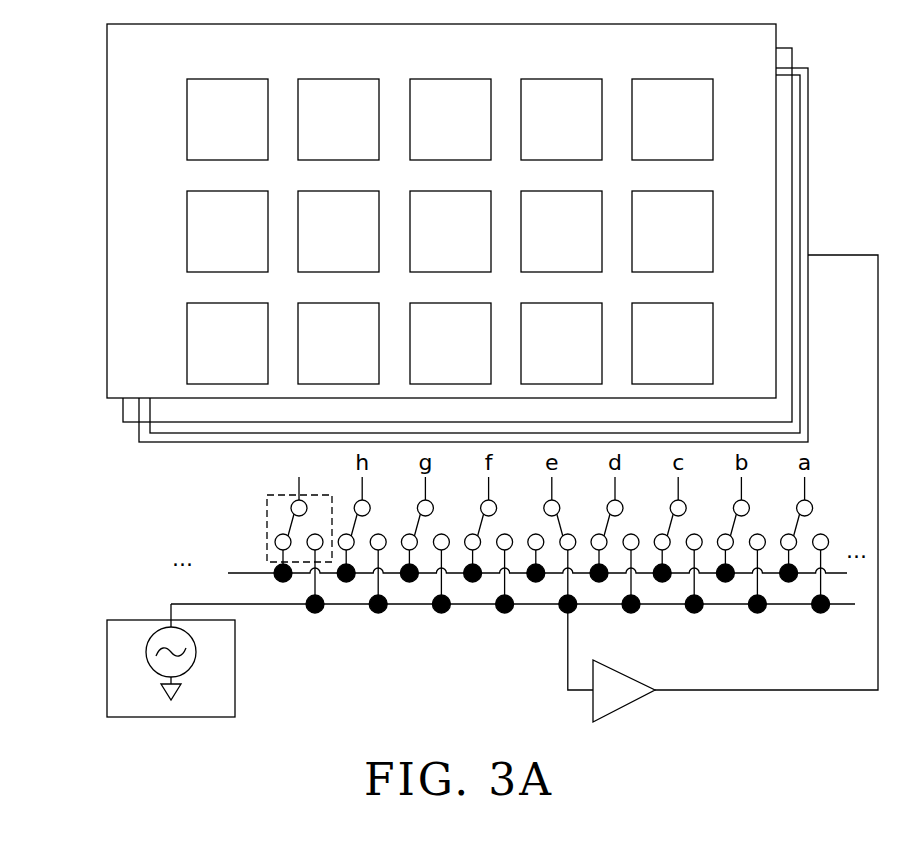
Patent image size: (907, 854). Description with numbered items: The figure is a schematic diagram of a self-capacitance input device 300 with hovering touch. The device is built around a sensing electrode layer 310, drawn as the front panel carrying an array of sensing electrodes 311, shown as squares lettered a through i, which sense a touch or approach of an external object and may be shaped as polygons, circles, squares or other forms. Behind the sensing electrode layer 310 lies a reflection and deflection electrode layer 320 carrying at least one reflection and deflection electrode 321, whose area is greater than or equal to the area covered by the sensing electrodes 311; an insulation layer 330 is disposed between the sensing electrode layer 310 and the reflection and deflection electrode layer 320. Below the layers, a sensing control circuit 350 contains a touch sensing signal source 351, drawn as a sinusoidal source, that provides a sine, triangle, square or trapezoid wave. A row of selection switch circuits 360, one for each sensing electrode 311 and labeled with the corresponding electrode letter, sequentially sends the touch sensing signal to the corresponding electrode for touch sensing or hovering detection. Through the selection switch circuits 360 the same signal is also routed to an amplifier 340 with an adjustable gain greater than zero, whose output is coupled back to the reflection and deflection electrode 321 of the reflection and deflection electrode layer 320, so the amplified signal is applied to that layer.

The self-capacitance input device 300 is at (65, 93).
The sensing electrode layer 310 is at (779, 37).
The sensing electrode 311 is at (470, 80).
The reflection and deflection electrode layer 320 is at (808, 143).
The reflection and deflection electrode 321 is at (800, 195).
The insulation layer 330 is at (793, 58).
The amplifier 340 is at (593, 714).
The sensing control circuit 350 is at (221, 660).
The touch sensing signal source 351 is at (197, 651).
The selection switch circuit 360 is at (267, 528).